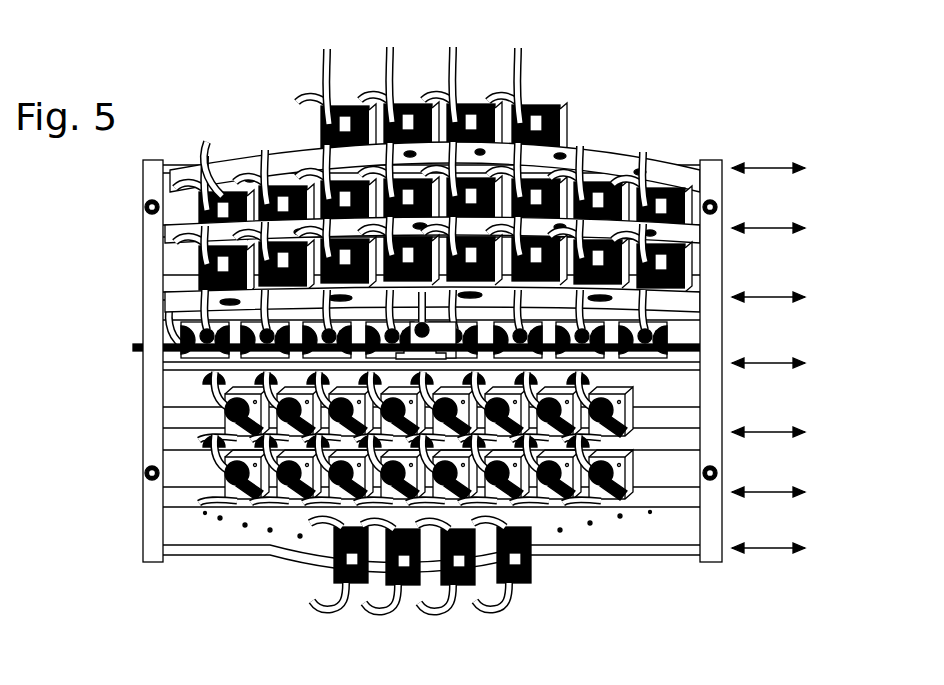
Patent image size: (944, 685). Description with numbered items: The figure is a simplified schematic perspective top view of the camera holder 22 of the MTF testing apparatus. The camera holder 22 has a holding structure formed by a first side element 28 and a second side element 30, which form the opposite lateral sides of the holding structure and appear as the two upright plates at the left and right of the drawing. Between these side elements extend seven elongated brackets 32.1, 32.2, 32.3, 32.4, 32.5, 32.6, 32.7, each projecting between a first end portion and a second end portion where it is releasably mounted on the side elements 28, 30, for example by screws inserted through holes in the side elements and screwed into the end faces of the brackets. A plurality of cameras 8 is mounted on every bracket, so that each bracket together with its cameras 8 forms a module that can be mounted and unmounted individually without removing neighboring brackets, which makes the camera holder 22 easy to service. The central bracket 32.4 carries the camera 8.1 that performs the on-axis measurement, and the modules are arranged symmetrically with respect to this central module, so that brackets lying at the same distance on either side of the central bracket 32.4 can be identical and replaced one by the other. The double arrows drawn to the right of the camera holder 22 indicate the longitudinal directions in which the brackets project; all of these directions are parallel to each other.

The camera holder 22 is at (644, 108).
The first side element 28 is at (150, 536).
The second side element 30 is at (716, 542).
The camera 8 is at (297, 195).
The camera performing the on-axis measurement 8.1 is at (440, 320).
The bracket 32.1 is at (180, 509).
The bracket 32.2 is at (180, 463).
The bracket 32.3 is at (180, 418).
The central bracket 32.4 is at (180, 381).
The bracket 32.5 is at (180, 283).
The bracket 32.6 is at (180, 249).
The bracket 32.7 is at (180, 191).